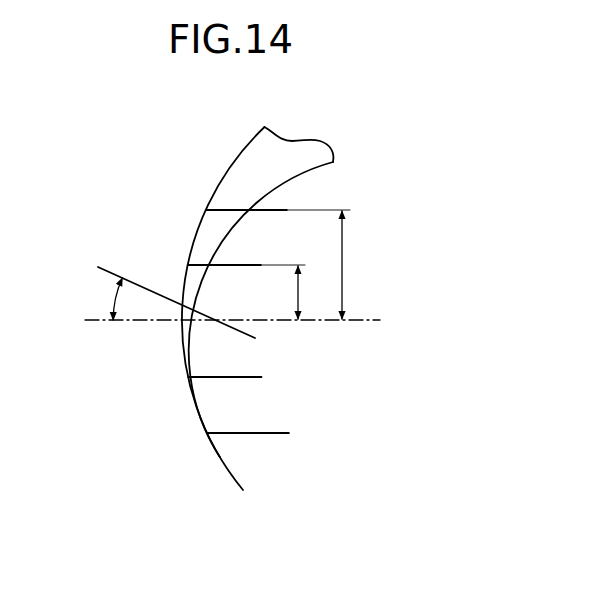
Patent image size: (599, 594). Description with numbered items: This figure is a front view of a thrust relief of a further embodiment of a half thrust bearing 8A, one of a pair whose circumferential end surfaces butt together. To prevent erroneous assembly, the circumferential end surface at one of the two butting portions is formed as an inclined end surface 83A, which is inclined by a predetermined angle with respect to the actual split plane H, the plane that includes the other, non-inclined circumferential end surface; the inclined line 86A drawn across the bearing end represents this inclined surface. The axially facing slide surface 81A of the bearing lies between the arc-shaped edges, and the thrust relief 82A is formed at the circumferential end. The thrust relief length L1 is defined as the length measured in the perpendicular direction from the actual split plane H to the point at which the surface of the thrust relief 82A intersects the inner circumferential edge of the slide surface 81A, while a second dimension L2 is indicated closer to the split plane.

The half thrust bearing 8A is at (181, 177).
The slide surface 81A is at (257, 165).
The thrust relief 82A is at (217, 228).
The inclined line / inclined portion 86A is at (200, 300).
The inclined end surface 83A is at (193, 313).
The actual split plane H is at (352, 322).
The thrust relief length L1 is at (318, 264).
The distance L2 is at (283, 292).